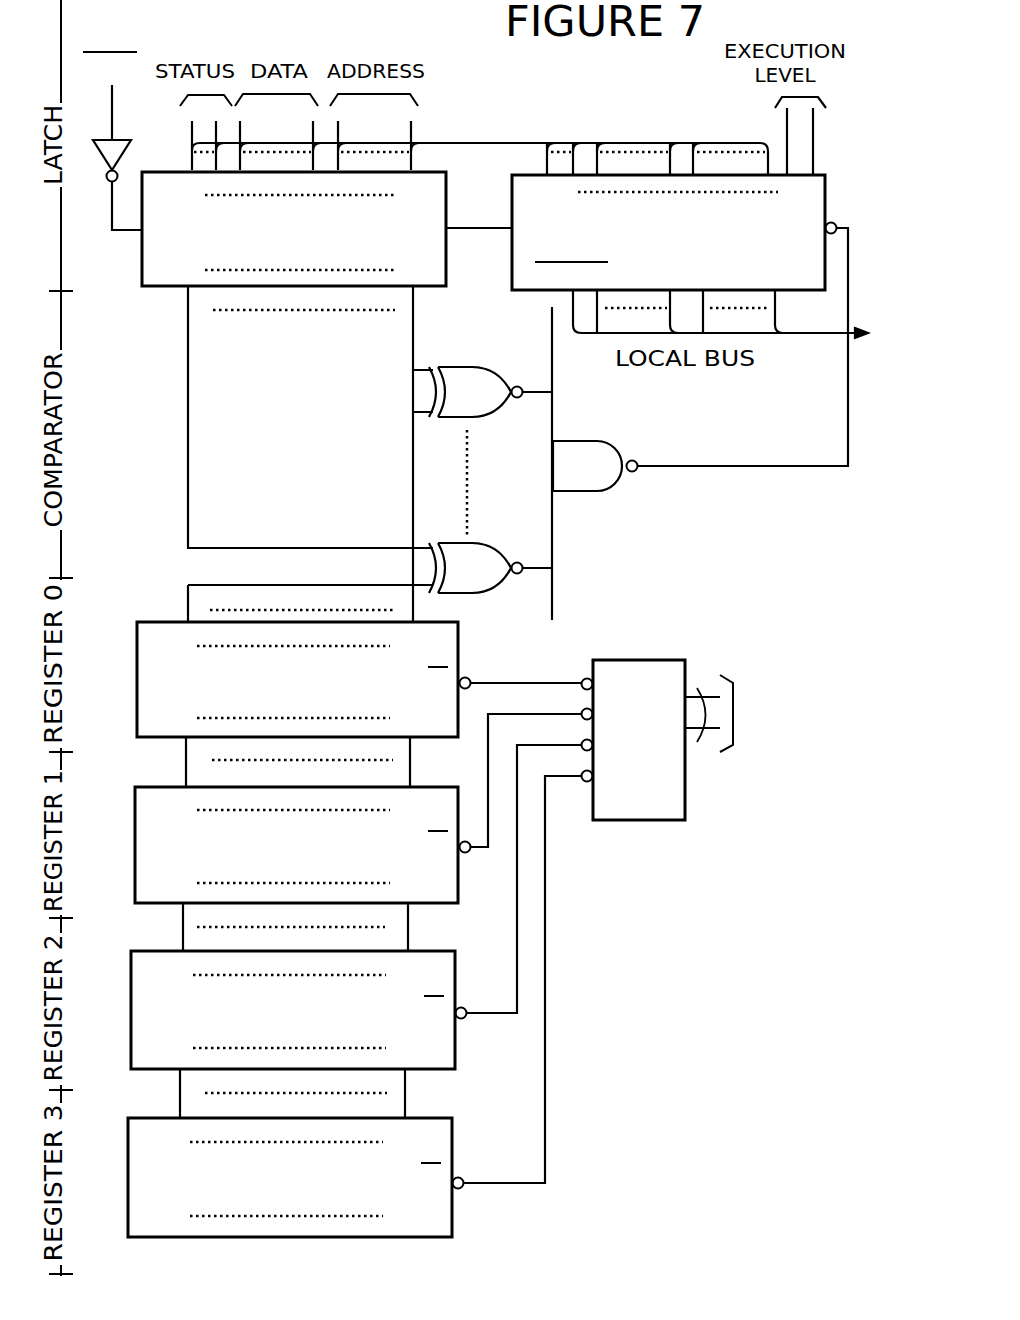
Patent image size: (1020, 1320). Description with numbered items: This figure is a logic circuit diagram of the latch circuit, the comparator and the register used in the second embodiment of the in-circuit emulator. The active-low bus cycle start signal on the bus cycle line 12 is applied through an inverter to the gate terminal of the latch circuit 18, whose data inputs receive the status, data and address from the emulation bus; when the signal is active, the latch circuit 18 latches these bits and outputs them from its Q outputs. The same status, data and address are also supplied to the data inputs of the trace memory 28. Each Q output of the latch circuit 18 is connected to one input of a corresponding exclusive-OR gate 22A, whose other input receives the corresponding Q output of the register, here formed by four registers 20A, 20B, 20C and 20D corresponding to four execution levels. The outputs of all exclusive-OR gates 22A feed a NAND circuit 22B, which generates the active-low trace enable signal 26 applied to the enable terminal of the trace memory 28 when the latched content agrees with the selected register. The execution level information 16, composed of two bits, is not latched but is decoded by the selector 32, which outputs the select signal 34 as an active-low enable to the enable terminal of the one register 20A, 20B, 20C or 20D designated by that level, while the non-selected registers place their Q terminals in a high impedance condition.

The bus cycle line 12 is at (112, 120).
The latch circuit 18 is at (142, 265).
The trace memory 28 is at (826, 192).
The exclusive-OR gate 22A is at (434, 367).
The NAND circuit 22B is at (588, 492).
The trace enable signal 26 is at (735, 468).
The register 20A is at (459, 652).
The register 20B is at (456, 877).
The register 20C is at (455, 1043).
The register 20D is at (452, 1203).
The selector 32 is at (658, 661).
The select signal 34 is at (575, 785).
The execution level information 16 is at (697, 688).